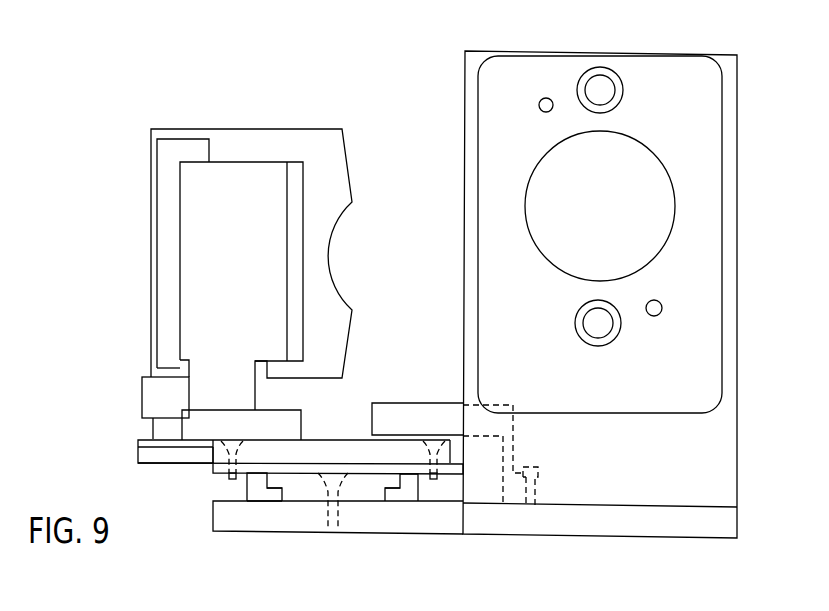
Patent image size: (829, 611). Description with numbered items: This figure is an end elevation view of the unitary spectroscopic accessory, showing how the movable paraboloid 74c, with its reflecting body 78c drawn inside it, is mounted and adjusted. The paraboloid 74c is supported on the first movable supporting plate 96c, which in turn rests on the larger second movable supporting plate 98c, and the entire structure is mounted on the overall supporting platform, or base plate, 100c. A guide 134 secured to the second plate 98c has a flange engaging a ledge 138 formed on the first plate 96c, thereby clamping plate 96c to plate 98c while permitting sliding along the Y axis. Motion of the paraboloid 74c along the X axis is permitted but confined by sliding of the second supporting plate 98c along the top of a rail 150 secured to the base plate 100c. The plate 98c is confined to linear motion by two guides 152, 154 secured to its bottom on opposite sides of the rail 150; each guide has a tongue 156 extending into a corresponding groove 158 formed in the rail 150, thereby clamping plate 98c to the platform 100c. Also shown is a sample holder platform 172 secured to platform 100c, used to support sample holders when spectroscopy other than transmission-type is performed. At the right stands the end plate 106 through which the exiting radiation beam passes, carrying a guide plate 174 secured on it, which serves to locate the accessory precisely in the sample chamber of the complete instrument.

The movable paraboloid 74c is at (291, 133).
The coil assembly 78c is at (229, 178).
The guide 134 is at (343, 450).
The ledge 138 is at (138, 440).
The first movable supporting plate 96c is at (137, 453).
The second movable supporting plate 98c is at (214, 467).
The base plate 100c is at (213, 513).
The guide 152 is at (260, 483).
The guide 154 is at (412, 487).
The tongue 156 is at (270, 492).
The rail 150 is at (352, 496).
The groove 158 is at (283, 498).
The sample holder platform 172 is at (438, 420).
The end plate 106 is at (705, 457).
The guide plate 174 is at (702, 247).